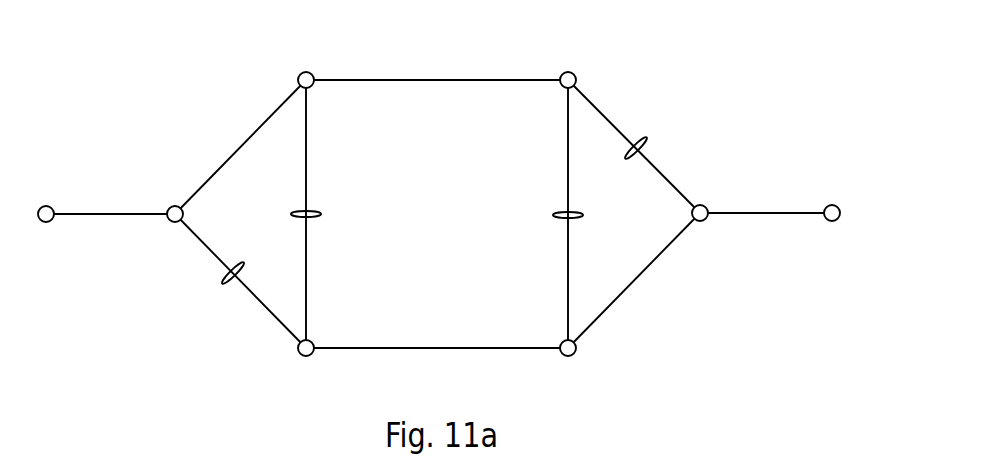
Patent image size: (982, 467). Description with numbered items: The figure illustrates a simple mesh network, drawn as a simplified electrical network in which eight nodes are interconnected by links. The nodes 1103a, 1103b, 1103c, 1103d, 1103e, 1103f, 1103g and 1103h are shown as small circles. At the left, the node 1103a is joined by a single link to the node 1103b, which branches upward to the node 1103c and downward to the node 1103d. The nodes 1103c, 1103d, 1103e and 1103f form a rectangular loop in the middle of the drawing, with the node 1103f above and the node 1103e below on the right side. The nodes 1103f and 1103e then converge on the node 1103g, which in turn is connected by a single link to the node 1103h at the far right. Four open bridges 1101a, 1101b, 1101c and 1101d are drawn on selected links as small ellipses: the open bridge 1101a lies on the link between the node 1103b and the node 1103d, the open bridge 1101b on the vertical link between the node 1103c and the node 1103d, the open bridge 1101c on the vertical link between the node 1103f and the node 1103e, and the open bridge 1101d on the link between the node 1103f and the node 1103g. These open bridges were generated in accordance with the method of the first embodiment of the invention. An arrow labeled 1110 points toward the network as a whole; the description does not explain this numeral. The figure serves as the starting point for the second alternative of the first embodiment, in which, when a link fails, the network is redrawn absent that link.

The node 1103a is at (46, 222).
The node 1103b is at (172, 207).
The node 1103c is at (303, 72).
The node 1103d is at (313, 353).
The node 1103e is at (575, 353).
The node 1103f is at (563, 73).
The node 1103g is at (705, 205).
The node 1103h is at (832, 221).
The open bridge 1101a is at (222, 278).
The open bridge 1101b is at (321, 215).
The open bridge 1101c is at (555, 215).
The open bridge 1101d is at (648, 138).
The network 1110 is at (653, 292).